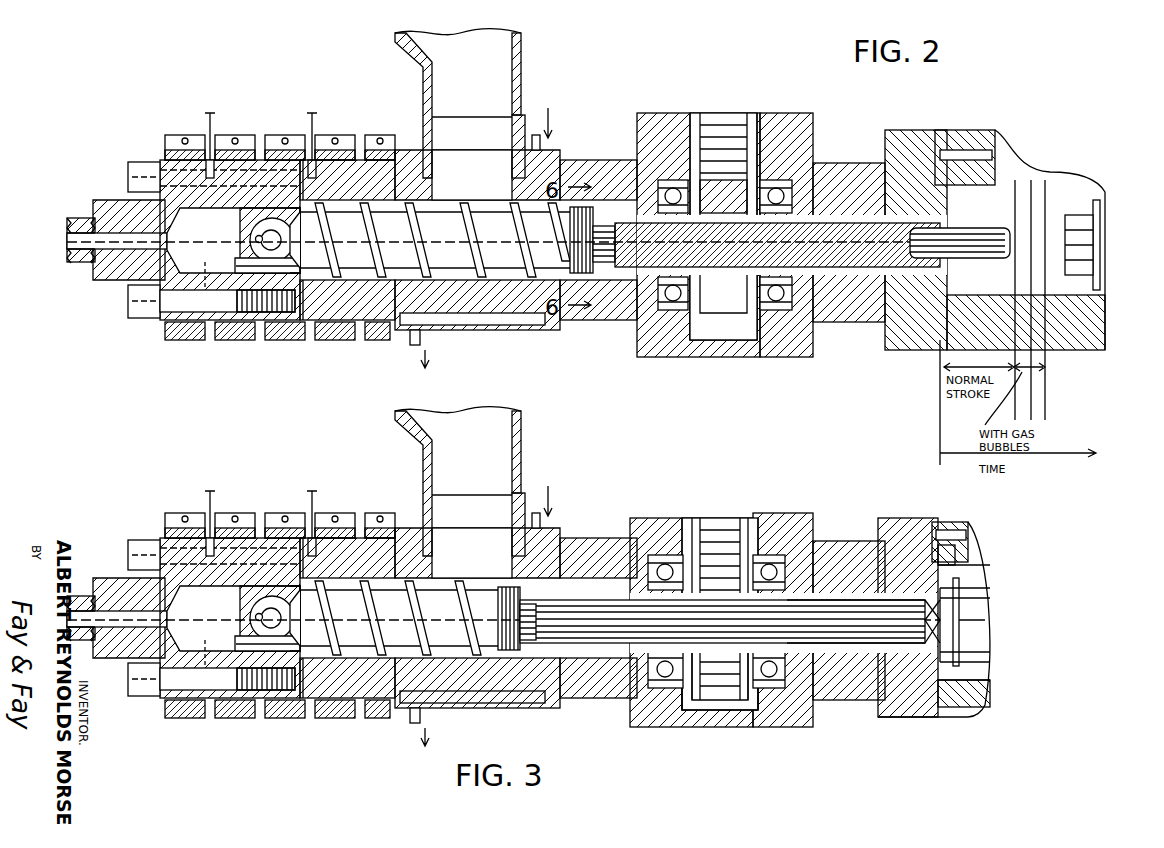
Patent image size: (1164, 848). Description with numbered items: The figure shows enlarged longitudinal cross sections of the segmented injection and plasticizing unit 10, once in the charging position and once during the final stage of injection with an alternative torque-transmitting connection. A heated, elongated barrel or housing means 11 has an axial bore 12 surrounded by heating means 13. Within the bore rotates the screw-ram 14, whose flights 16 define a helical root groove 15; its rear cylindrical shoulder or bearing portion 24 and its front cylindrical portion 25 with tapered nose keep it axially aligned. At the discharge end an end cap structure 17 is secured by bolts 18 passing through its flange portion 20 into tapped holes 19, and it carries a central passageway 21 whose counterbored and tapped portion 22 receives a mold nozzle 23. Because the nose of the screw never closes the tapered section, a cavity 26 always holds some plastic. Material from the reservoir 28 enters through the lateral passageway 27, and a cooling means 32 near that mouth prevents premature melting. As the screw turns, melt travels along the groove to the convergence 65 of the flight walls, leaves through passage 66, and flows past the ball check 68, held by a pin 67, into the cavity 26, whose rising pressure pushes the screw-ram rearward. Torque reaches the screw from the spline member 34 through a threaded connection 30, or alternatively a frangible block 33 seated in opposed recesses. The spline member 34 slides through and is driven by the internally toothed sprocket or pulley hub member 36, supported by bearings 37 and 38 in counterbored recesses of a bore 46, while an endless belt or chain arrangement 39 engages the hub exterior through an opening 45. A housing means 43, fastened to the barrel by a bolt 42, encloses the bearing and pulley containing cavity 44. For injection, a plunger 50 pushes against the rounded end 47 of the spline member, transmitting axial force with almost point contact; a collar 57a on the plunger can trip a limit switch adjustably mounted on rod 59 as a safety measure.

In FIG. 2, the segmented injection and plasticizing unit 10 is at (180, 100).
In FIG. 3, the segmented injection and plasticizing unit 10 is at (173, 472).
In FIG. 2, the barrel or housing means 11 is at (380, 167).
In FIG. 3, the barrel or housing means 11 is at (340, 552).
In FIG. 2, the axial bore 12 is at (455, 300).
In FIG. 3, the axial bore 12 is at (455, 680).
In FIG. 2, the heating means 13 is at (275, 150).
In FIG. 3, the heating means 13 is at (268, 530).
In FIG. 2, the screw-ram 14 is at (363, 272).
In FIG. 3, the screw-ram 14 is at (335, 650).
In FIG. 2, the helical root groove 15 is at (305, 275).
In FIG. 3, the helical root groove 15 is at (283, 660).
In FIG. 2, the flights 16 is at (500, 322).
In FIG. 3, the flights 16 is at (372, 565).
In FIG. 2, the end cap structure 17 is at (118, 200).
In FIG. 3, the end cap structure 17 is at (105, 578).
In FIG. 2, the bolts 18 is at (152, 160).
In FIG. 3, the bolts 18 is at (130, 700).
In FIG. 2, the tapped holes 19 is at (258, 312).
In FIG. 3, the tapped holes 19 is at (245, 690).
In FIG. 2, the flange portion 20 is at (160, 302).
In FIG. 3, the flange portion 20 is at (162, 690).
In FIG. 2, the central passageway 21 is at (212, 262).
In FIG. 3, the central passageway 21 is at (210, 645).
In FIG. 2, the counterbored and tapped portion 22 is at (75, 220).
In FIG. 3, the counterbored and tapped portion 22 is at (95, 640).
In FIG. 2, the mold nozzle 23 is at (70, 262).
In FIG. 3, the mold nozzle 23 is at (80, 600).
In FIG. 2, the cylindrical shoulder or bearing portion 24 is at (588, 205).
In FIG. 3, the cylindrical shoulder or bearing portion 24 is at (515, 655).
In FIG. 2, the cylindrical portion 25 is at (290, 280).
In FIG. 3, the cylindrical portion 25 is at (182, 560).
In FIG. 2, the cavity 26 is at (172, 210).
In FIG. 3, the cavity 26 is at (160, 590).
In FIG. 2, the lateral passageway 27 is at (510, 182).
In FIG. 3, the lateral passageway 27 is at (505, 565).
In FIG. 2, the material reservoir 28 is at (522, 48).
In FIG. 3, the material reservoir 28 is at (522, 428).
In FIG. 2, the threaded connection 30 is at (600, 322).
In FIG. 3, the threaded connection 30 is at (510, 700).
In FIG. 2, the cooling means 32 is at (415, 345).
In FIG. 3, the cooling means 32 is at (415, 722).
In FIG. 2, the frangible block 33 is at (604, 244).
In FIG. 3, the frangible block 33 is at (520, 600).
In FIG. 2, the spline member 34 is at (838, 209).
In FIG. 3, the spline member 34 is at (601, 591).
In FIG. 2, the sprocket or pulley hub member 36 is at (800, 160).
In FIG. 3, the sprocket or pulley hub member 36 is at (800, 615).
In FIG. 2, the bearing 37 is at (668, 312).
In FIG. 3, the bearing 37 is at (668, 690).
In FIG. 2, the bearing 38 is at (785, 312).
In FIG. 3, the bearing 38 is at (785, 690).
In FIG. 2, the endless belt or chain arrangement 39 is at (748, 120).
In FIG. 3, the endless belt or chain arrangement 39 is at (752, 500).
In FIG. 2, the bolt 42 is at (955, 292).
In FIG. 3, the bolt 42 is at (950, 720).
In FIG. 2, the housing means 43 is at (796, 107).
In FIG. 3, the housing means 43 is at (811, 493).
In FIG. 2, the bearing and pulley containing cavity 44 is at (722, 340).
In FIG. 3, the bearing and pulley containing cavity 44 is at (728, 715).
In FIG. 2, the opening 45 is at (692, 120).
In FIG. 3, the opening 45 is at (688, 500).
In FIG. 2, the bore 46 is at (855, 262).
In FIG. 3, the bore 46 is at (835, 610).
In FIG. 2, the rounded end 47 is at (1012, 235).
In FIG. 3, the rounded end 47 is at (925, 643).
In FIG. 2, the plunger 50 is at (1090, 245).
In FIG. 3, the plunger 50 is at (985, 618).
In FIG. 2, the collar 57a is at (1092, 205).
In FIG. 3, the collar 57a is at (960, 582).
In FIG. 2, the rod 59 is at (970, 140).
In FIG. 3, the rod 59 is at (968, 530).
In FIG. 2, the convergence 65 is at (338, 160).
In FIG. 3, the convergence 65 is at (220, 545).
In FIG. 2, the passage 66 is at (240, 220).
In FIG. 3, the passage 66 is at (245, 610).
In FIG. 2, the pin 67 is at (258, 240).
In FIG. 3, the pin 67 is at (190, 620).
In FIG. 2, the ball check 68 is at (250, 265).
In FIG. 3, the ball check 68 is at (255, 628).